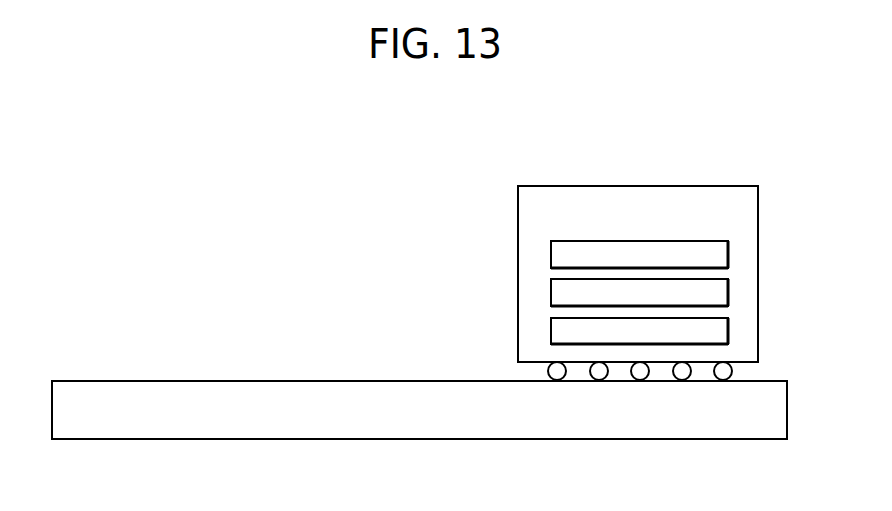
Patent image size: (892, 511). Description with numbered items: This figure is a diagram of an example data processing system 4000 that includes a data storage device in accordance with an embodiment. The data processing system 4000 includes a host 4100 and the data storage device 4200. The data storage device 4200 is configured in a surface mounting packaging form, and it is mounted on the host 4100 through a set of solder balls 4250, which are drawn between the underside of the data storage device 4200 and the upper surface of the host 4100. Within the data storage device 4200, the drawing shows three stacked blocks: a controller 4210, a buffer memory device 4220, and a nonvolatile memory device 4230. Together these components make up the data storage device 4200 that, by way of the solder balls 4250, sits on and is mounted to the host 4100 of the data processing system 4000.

The data processing system 4000 is at (128, 154).
The host 4100 is at (419, 410).
The data storage device 4200 is at (638, 274).
The controller 4210 is at (639, 254).
The buffer memory device 4220 is at (639, 292).
The nonvolatile memory device 4230 is at (639, 331).
The solder balls 4250 is at (744, 371).